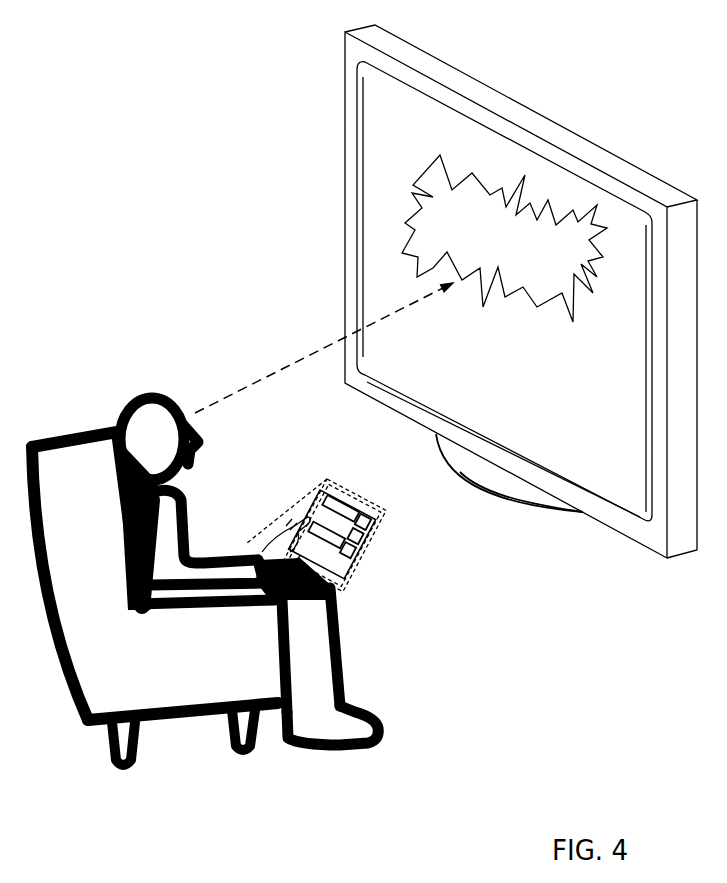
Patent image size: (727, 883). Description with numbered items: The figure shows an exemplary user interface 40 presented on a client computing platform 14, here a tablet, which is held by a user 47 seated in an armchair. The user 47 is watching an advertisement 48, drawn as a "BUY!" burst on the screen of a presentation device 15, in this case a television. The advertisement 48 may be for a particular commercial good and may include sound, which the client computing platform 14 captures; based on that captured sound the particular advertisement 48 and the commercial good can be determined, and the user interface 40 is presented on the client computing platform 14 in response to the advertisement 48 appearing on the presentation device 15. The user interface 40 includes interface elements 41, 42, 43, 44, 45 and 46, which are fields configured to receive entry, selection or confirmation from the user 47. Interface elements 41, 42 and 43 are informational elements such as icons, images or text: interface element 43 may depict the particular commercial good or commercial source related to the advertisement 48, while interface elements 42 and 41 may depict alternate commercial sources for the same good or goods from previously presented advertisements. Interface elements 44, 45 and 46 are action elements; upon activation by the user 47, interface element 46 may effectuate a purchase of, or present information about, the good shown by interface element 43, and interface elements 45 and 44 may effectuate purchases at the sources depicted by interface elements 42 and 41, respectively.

The client computing platform 14 is at (388, 513).
The presentation device 15 is at (660, 552).
The user interface 40 is at (333, 572).
The interface element 41 is at (313, 540).
The interface element 42 is at (314, 521).
The interface element 43 is at (322, 498).
The interface element 44 is at (354, 553).
The interface element 45 is at (364, 538).
The interface element 46 is at (374, 524).
The user 47 is at (248, 571).
The advertisement 48 is at (572, 321).